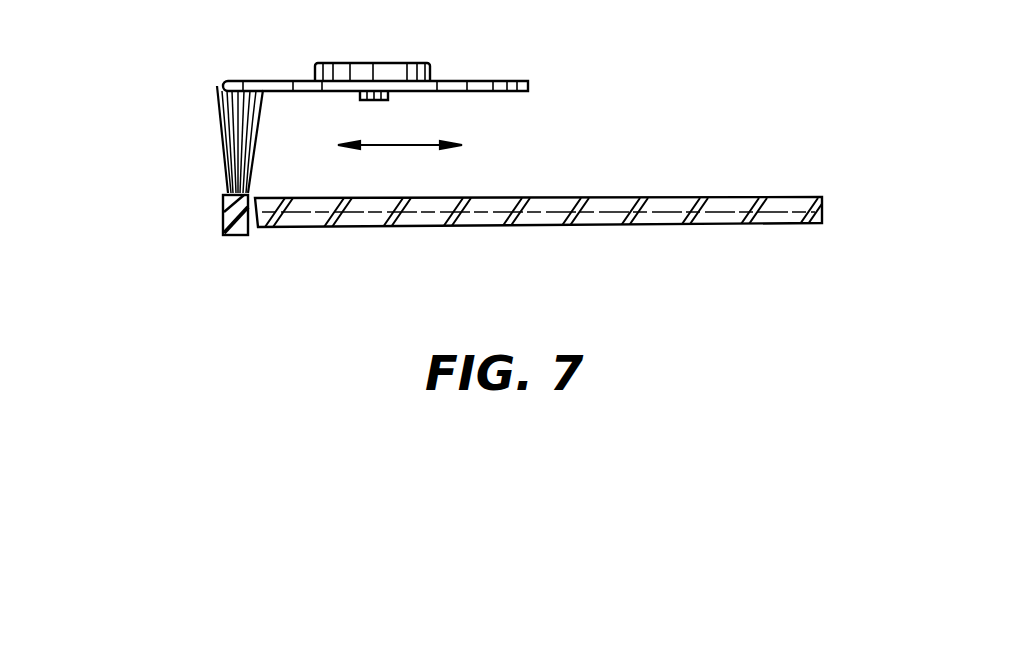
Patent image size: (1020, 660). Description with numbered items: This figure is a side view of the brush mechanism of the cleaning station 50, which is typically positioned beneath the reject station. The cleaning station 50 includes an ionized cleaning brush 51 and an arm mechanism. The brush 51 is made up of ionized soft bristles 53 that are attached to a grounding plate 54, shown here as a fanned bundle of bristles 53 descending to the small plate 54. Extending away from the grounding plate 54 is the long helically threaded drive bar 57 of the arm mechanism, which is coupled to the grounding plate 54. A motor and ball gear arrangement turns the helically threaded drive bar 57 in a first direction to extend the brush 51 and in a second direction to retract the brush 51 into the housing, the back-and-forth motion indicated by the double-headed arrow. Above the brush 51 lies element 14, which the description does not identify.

The lid / strip holder 14 is at (463, 80).
The cleaning station 50 is at (213, 262).
The brush 51 is at (170, 197).
The ionized soft bristles 53 is at (222, 120).
The grounding plate 54 is at (250, 192).
The helically threaded drive bar 57 is at (653, 220).